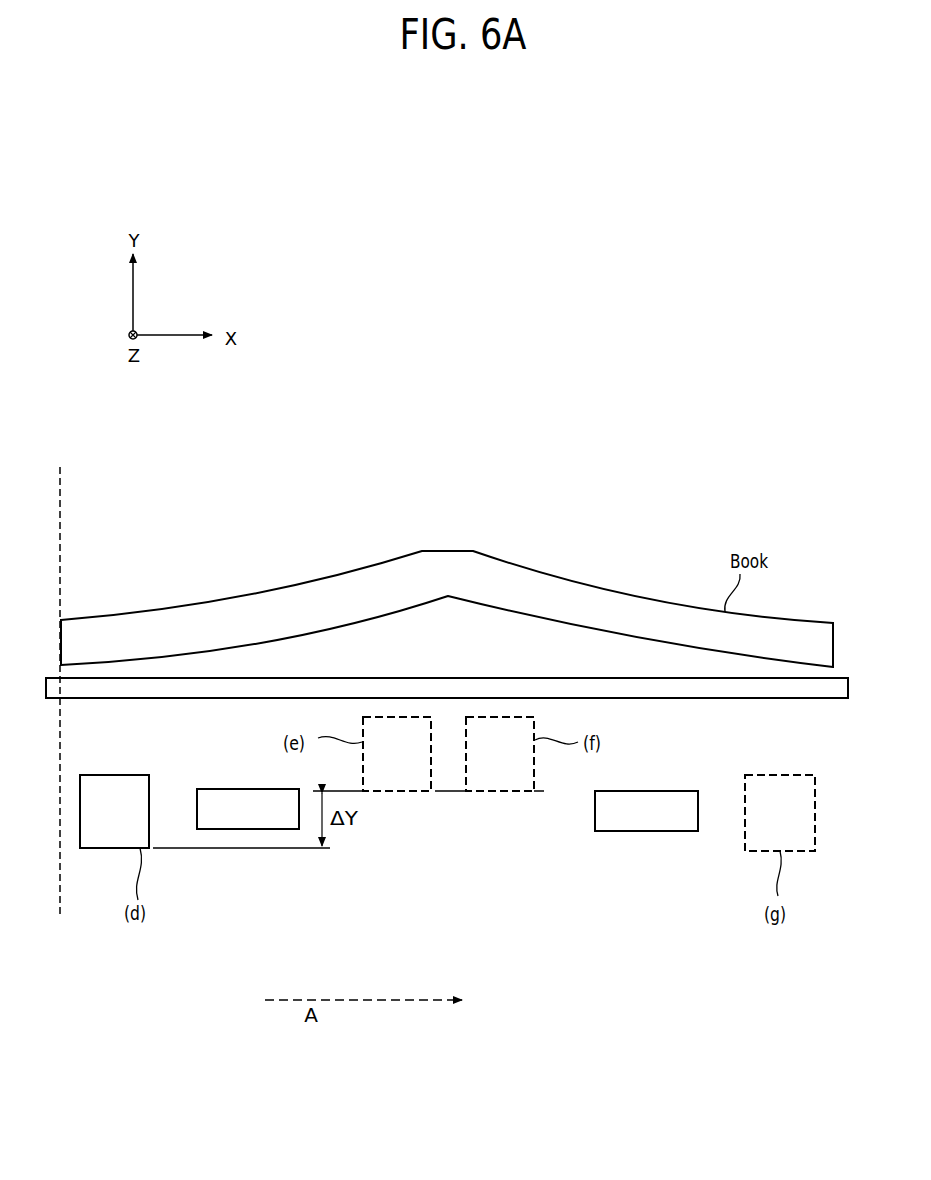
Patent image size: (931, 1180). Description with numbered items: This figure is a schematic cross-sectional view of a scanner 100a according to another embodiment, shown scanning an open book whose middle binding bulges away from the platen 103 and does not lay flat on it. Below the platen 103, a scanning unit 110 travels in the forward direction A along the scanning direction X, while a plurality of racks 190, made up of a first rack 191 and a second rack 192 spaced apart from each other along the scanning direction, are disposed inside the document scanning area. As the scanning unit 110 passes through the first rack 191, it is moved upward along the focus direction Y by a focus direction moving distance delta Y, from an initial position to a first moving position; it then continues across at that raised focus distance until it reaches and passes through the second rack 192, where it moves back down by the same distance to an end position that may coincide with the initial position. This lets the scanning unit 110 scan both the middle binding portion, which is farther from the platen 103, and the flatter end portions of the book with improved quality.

The scanner 100a is at (693, 409).
The platen 103 is at (163, 685).
The scanning unit 110 is at (96, 845).
The plurality of racks 190 is at (243, 927).
The first rack 191 is at (245, 825).
The second rack 192 is at (658, 828).